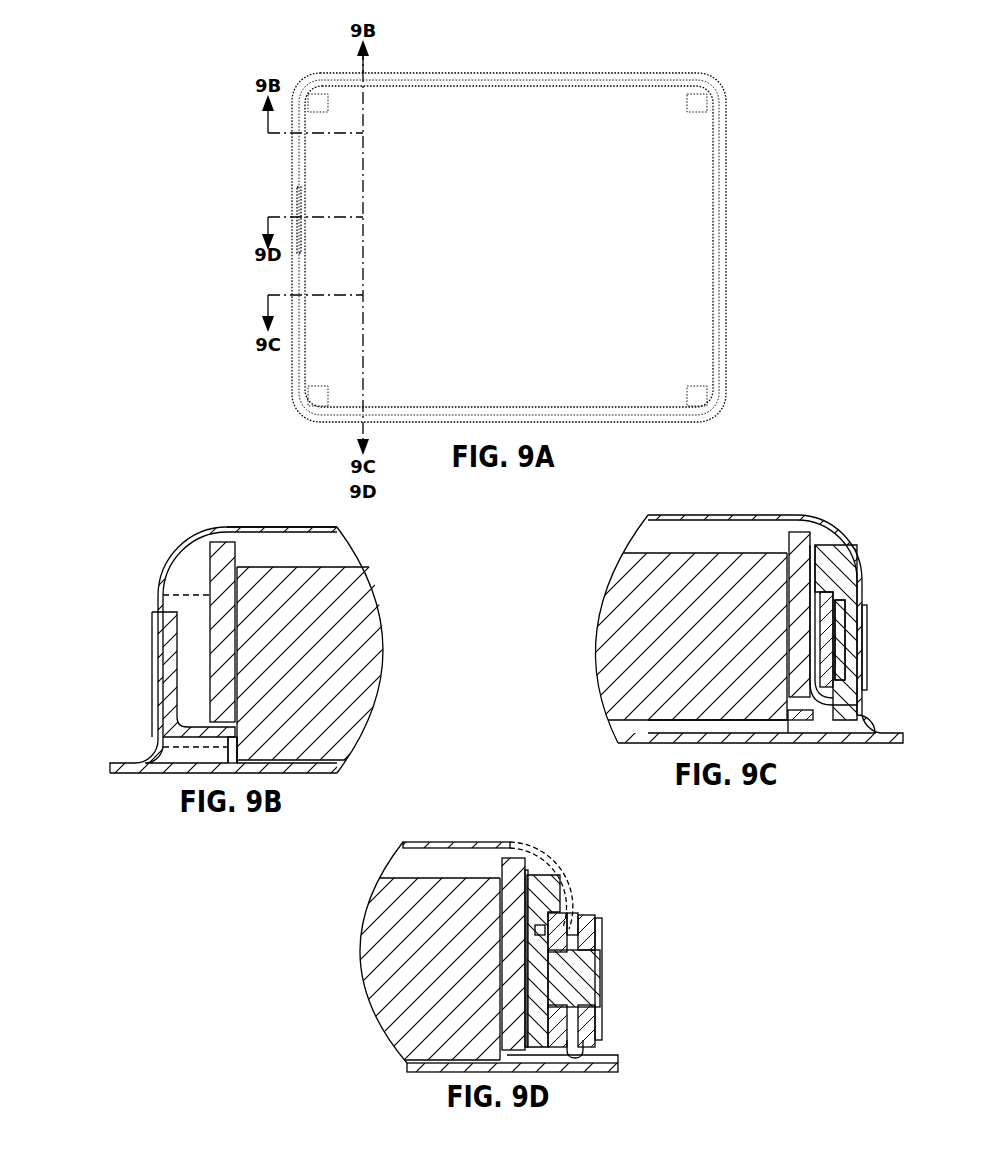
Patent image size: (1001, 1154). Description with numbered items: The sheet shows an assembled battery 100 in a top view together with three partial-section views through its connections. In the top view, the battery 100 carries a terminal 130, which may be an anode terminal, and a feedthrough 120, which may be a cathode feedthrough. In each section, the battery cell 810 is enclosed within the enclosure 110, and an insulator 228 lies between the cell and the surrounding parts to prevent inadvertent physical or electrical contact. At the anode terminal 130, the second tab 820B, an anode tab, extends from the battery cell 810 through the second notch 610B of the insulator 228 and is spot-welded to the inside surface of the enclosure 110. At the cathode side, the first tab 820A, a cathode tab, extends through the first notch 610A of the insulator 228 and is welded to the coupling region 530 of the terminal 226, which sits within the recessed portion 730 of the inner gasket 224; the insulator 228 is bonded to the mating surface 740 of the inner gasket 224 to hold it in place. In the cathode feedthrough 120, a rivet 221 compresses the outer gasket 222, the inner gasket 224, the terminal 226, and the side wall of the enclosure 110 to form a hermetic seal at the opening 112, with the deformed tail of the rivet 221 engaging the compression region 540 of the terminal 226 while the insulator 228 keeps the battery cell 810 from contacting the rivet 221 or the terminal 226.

In FIG. 9A, the battery 100 is at (204, 23).
In FIG. 9B, the battery 100 is at (64, 491).
In FIG. 9C, the battery 100 is at (576, 514).
In FIG. 9D, the battery 100 is at (330, 852).
In FIG. 9B, the enclosure 110 is at (228, 527).
In FIG. 9C, the enclosure 110 is at (772, 517).
In FIG. 9D, the enclosure 110 is at (457, 842).
In FIG. 9D, the opening 112 is at (573, 927).
In FIG. 9A, the feedthrough 120 is at (297, 205).
In FIG. 9D, the feedthrough 120 is at (706, 815).
In FIG. 9A, the terminal 130 is at (304, 148).
In FIG. 9B, the terminal 130 is at (160, 655).
In FIG. 9D, the rivet 221 is at (603, 977).
In FIG. 9D, the outer gasket 222 is at (573, 907).
In FIG. 9C, the inner gasket 224 is at (838, 565).
In FIG. 9D, the inner gasket 224 is at (550, 900).
In FIG. 9C, the terminal 226 is at (897, 635).
In FIG. 9D, the terminal 226 is at (623, 1045).
In FIG. 9B, the insulator 228 is at (215, 558).
In FIG. 9C, the insulator 228 is at (802, 560).
In FIG. 9D, the insulator 228 is at (512, 862).
In FIG. 9C, the coupling region 530 is at (840, 655).
In FIG. 9D, the compression region 540 is at (570, 1023).
In FIG. 9C, the first notch 610A is at (806, 715).
In FIG. 9B, the second notch 610B is at (236, 718).
In FIG. 9C, the recessed portion 730 is at (841, 667).
In FIG. 9C, the mating surface 740 is at (815, 560).
In FIG. 9D, the mating surface 740 is at (523, 868).
In FIG. 9B, the battery cell 810 is at (330, 683).
In FIG. 9C, the battery cell 810 is at (647, 668).
In FIG. 9D, the battery cell 810 is at (375, 983).
In FIG. 9C, the first tab 820A is at (827, 617).
In FIG. 9B, the second tab 820B is at (185, 730).